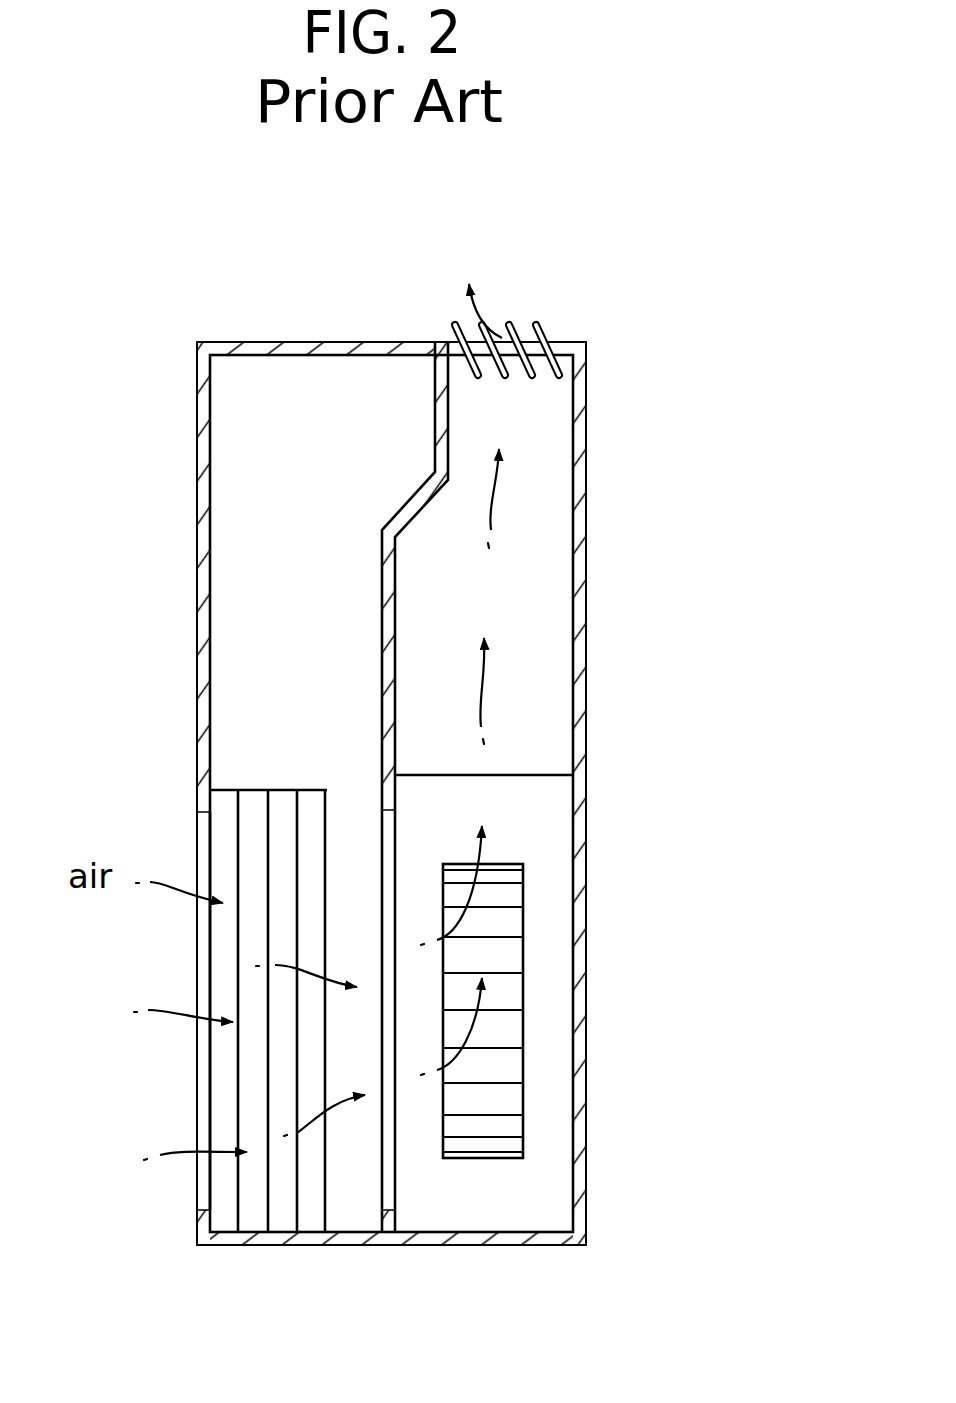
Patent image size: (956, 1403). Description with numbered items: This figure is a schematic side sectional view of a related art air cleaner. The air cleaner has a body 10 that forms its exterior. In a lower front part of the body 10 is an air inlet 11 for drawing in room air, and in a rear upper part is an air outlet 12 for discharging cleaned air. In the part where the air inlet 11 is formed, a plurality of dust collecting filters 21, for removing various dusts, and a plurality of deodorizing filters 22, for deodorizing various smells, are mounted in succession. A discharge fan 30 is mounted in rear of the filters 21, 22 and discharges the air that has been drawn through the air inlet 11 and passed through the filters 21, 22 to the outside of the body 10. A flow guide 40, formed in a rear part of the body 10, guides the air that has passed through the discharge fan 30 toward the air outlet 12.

The body 10 is at (575, 533).
The air inlet 11 is at (203, 1082).
The air outlet 12 is at (523, 335).
The dust collecting filters 21 is at (222, 1218).
The deodorizing filters 22 is at (282, 1218).
The discharge fan 30 is at (508, 1032).
The flow guide 40 is at (391, 640).